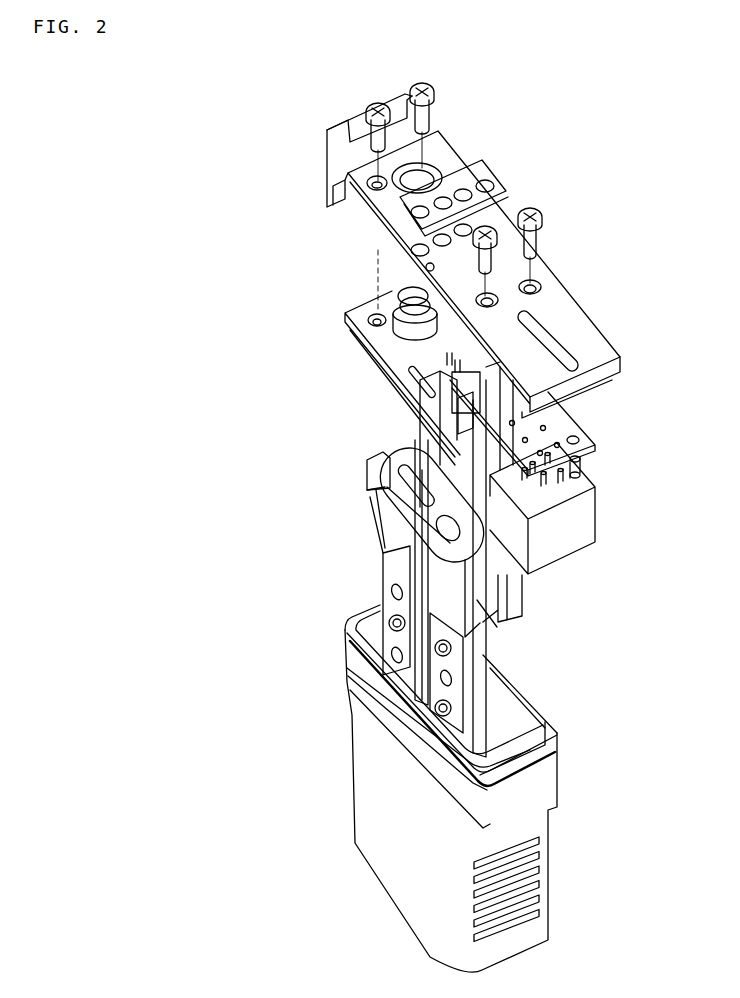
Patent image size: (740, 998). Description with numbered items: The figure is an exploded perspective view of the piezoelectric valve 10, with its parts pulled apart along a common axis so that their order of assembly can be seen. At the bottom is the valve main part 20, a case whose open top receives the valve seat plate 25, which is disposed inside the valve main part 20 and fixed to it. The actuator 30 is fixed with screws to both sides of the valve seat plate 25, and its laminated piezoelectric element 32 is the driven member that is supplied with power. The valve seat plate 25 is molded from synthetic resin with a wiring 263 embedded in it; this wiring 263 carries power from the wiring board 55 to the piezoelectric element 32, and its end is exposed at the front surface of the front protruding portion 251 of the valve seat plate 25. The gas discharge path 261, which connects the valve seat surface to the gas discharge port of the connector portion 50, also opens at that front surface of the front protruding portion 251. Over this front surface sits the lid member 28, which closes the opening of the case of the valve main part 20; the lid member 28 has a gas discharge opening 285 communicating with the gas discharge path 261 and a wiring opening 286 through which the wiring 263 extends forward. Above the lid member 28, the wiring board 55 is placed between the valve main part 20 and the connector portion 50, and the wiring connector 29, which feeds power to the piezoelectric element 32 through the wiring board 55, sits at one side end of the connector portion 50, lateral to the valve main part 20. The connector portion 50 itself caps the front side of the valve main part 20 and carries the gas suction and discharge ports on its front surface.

The piezoelectric valve 10 is at (273, 127).
The valve main part 20 is at (380, 790).
The valve seat plate 25 is at (480, 653).
The lid member 28 is at (360, 317).
The gas discharge opening 285 is at (385, 370).
The wiring opening 286 is at (420, 408).
The front protruding portion 251 is at (420, 480).
The gas discharge path 261 is at (368, 468).
The wiring 263 is at (397, 520).
The wiring connector 29 is at (577, 518).
The actuator 30 is at (395, 630).
The laminated piezoelectric element 32 is at (425, 657).
The connector portion 50 is at (573, 327).
The wiring board 55 is at (565, 425).